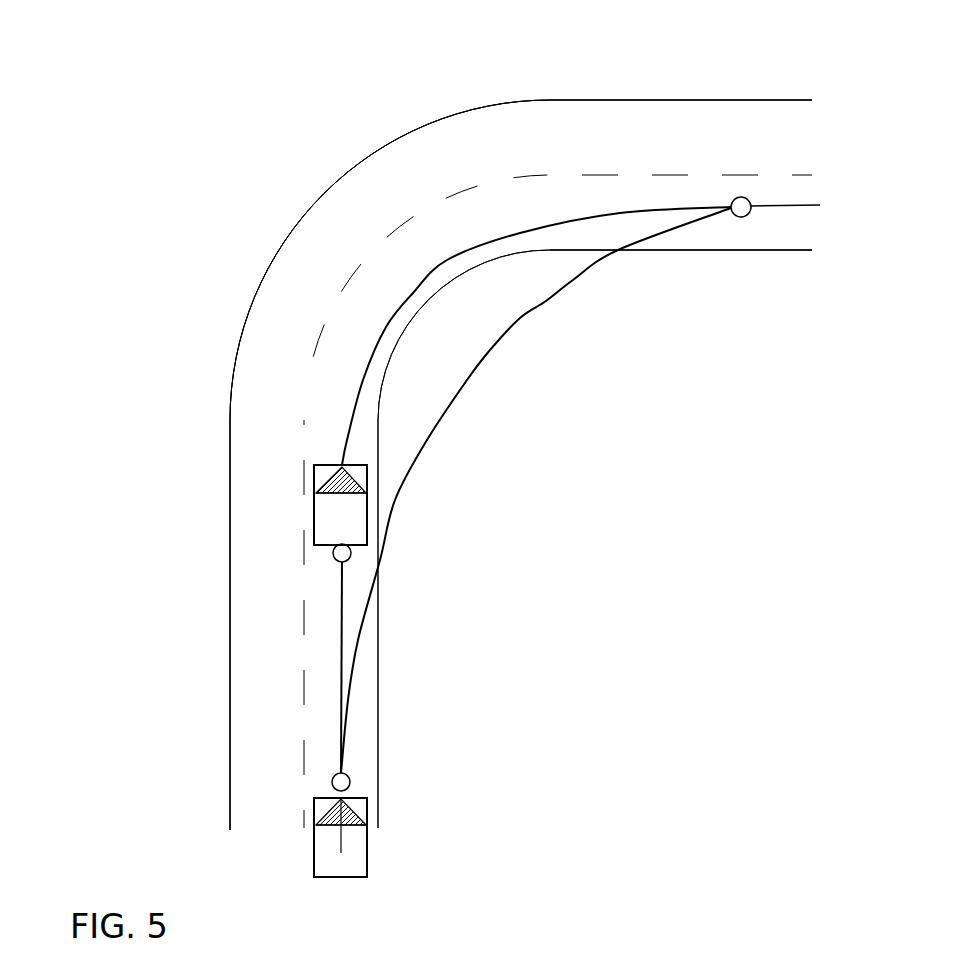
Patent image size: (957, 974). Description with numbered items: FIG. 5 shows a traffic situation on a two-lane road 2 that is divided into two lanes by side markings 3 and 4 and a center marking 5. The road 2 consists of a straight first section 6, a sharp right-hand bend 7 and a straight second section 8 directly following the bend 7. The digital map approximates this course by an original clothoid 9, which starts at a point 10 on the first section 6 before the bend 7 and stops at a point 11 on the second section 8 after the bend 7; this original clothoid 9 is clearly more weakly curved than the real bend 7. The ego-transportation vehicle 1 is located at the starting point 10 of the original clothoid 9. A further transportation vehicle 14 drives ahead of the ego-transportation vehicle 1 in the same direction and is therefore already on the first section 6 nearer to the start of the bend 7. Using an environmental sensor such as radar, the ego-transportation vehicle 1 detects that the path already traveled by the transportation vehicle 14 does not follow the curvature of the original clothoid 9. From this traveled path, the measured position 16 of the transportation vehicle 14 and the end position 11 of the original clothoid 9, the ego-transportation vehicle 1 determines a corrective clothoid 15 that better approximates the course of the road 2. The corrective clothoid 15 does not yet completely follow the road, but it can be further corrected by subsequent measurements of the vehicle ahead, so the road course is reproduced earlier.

The transportation vehicle 1 is at (366, 842).
The road 2 is at (267, 725).
The side marking 3 is at (229, 672).
The side marking 4 is at (378, 710).
The center marking 5 is at (304, 617).
The first section 6 is at (152, 457).
The bend 7 is at (310, 151).
The second section 8 is at (572, 76).
The original clothoid 9 is at (546, 301).
The point 10 is at (350, 781).
The point 11 is at (741, 217).
The further transportation vehicle 14 is at (366, 508).
The corrective clothoid 15 is at (386, 327).
The measured position 16 is at (349, 557).